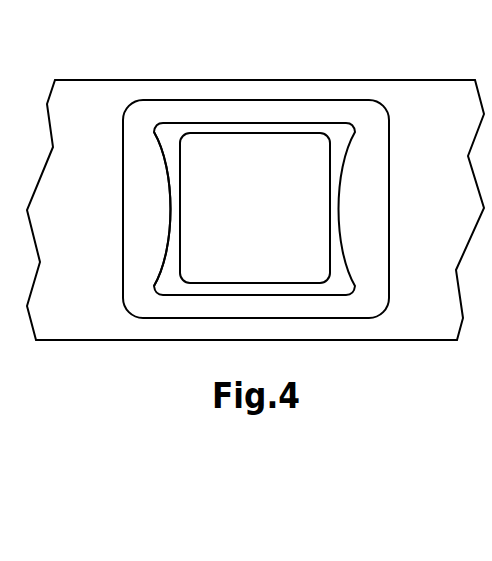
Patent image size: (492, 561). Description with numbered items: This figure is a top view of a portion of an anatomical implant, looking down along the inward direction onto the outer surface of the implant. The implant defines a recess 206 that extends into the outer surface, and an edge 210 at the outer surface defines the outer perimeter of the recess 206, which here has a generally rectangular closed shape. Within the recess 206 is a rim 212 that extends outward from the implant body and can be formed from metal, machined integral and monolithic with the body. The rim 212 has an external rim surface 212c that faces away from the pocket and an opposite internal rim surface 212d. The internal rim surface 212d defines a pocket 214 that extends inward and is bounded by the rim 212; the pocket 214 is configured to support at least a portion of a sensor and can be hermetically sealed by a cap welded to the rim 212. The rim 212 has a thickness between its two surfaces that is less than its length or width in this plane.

The recess 206 is at (153, 223).
The edge 210 is at (173, 100).
The rim 212 is at (277, 128).
The external rim surface 212c is at (172, 183).
The internal rim surface 212d is at (180, 210).
The pocket 214 is at (292, 170).